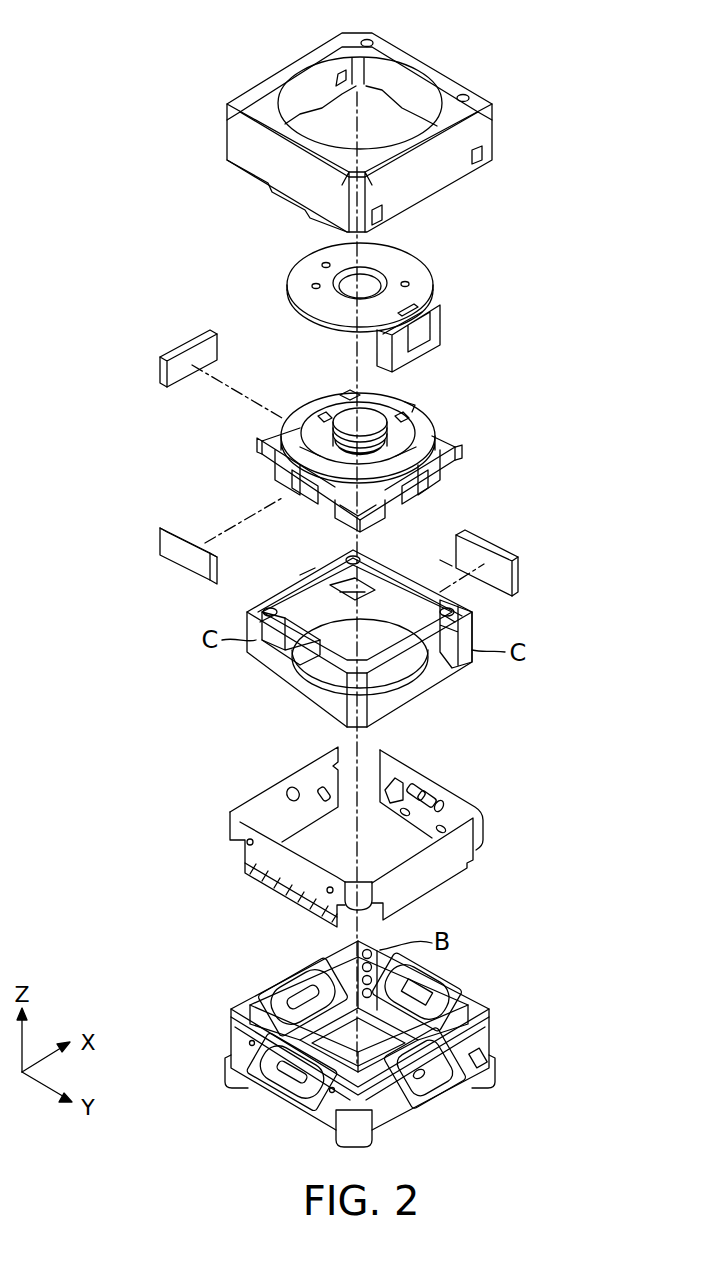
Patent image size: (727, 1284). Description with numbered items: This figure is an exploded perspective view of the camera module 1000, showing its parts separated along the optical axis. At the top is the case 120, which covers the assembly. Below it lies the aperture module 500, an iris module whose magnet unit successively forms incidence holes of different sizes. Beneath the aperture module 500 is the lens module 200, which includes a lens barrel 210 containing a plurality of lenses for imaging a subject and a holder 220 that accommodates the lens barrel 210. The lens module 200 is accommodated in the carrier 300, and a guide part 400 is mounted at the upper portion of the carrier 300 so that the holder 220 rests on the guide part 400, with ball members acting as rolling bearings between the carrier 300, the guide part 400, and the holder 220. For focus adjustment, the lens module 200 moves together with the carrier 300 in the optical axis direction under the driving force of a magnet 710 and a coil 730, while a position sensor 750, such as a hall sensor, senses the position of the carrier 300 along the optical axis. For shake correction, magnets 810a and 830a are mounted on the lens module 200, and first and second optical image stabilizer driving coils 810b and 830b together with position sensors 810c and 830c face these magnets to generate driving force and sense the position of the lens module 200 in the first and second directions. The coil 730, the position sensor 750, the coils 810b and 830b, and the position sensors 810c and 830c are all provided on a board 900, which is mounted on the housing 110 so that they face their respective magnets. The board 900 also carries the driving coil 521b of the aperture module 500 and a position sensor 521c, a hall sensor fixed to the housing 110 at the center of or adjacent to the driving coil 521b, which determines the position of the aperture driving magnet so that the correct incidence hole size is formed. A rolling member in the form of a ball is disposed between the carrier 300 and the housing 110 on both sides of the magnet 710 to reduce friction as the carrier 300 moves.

The camera module 1000 is at (212, 36).
The case 120 is at (480, 133).
The aperture module 500 is at (458, 292).
The magnet 810a is at (188, 345).
The magnet 830a is at (183, 555).
The magnet 710 is at (520, 585).
The lens module 200 is at (547, 368).
The lens barrel 210 is at (397, 420).
The holder 220 is at (433, 430).
The carrier 300 is at (430, 690).
The guide part 400 is at (258, 658).
The board 900 is at (462, 862).
The housing 110 is at (467, 1040).
The coil 810b is at (272, 980).
The position sensor 810c is at (300, 975).
The coil 730 is at (415, 975).
The position sensor 750 is at (445, 985).
The coil 830b is at (302, 1100).
The position sensor 830c is at (280, 1085).
The driving coil 521b is at (435, 1095).
The position sensor 521c is at (478, 1075).